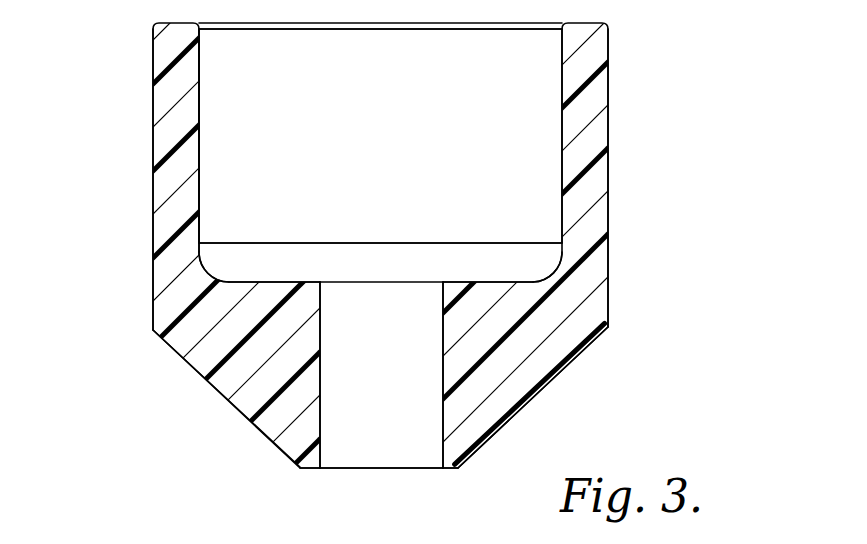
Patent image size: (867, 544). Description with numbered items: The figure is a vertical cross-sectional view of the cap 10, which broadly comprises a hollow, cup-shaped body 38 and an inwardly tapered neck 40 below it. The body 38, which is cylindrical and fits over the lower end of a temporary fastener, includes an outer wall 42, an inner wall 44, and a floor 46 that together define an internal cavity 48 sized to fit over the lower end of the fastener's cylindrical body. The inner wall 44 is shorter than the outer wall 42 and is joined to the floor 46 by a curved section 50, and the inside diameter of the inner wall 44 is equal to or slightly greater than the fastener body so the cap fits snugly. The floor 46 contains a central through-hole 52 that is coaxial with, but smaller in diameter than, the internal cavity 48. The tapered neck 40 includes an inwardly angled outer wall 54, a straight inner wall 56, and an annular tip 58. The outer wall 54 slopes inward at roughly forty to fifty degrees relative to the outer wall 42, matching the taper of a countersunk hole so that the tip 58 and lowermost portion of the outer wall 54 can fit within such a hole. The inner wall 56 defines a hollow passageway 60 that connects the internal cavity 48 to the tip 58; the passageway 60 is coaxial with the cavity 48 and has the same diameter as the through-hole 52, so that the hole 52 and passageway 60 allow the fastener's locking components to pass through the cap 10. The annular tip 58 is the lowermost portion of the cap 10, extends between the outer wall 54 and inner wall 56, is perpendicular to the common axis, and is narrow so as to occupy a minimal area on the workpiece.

The cap 10 is at (420, 267).
The hollow body 38 is at (608, 190).
The tapered neck 40 is at (553, 380).
The outer wall 42 is at (153, 145).
The inner wall 44 is at (199, 143).
The floor 46 is at (272, 283).
The internal cavity 48 is at (337, 93).
The curved section 50 is at (209, 265).
The central through-hole 52 is at (320, 283).
The outer wall 54 is at (215, 388).
The inner wall 56 is at (320, 364).
The annular tip 58 is at (312, 470).
The hollow passageway 60 is at (327, 417).